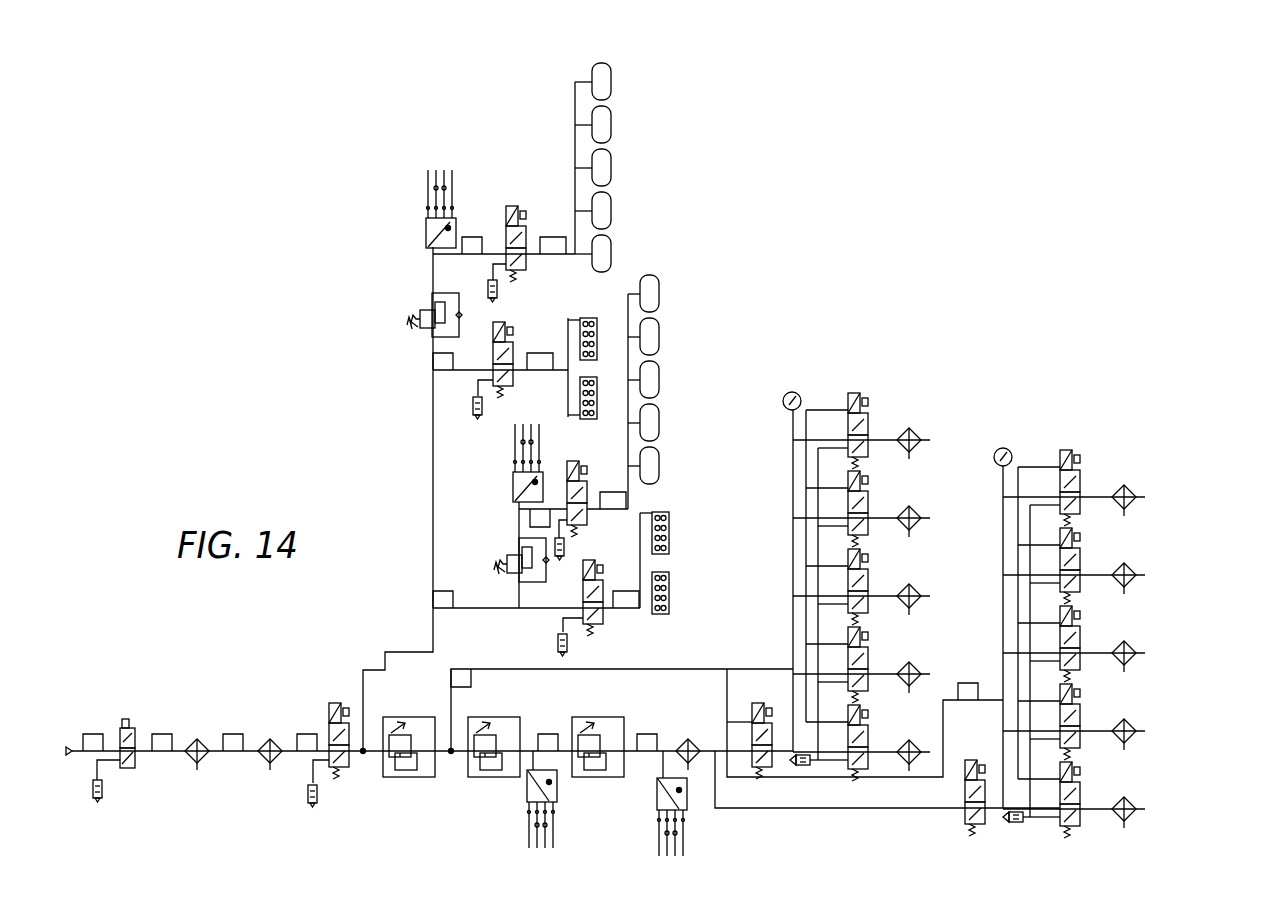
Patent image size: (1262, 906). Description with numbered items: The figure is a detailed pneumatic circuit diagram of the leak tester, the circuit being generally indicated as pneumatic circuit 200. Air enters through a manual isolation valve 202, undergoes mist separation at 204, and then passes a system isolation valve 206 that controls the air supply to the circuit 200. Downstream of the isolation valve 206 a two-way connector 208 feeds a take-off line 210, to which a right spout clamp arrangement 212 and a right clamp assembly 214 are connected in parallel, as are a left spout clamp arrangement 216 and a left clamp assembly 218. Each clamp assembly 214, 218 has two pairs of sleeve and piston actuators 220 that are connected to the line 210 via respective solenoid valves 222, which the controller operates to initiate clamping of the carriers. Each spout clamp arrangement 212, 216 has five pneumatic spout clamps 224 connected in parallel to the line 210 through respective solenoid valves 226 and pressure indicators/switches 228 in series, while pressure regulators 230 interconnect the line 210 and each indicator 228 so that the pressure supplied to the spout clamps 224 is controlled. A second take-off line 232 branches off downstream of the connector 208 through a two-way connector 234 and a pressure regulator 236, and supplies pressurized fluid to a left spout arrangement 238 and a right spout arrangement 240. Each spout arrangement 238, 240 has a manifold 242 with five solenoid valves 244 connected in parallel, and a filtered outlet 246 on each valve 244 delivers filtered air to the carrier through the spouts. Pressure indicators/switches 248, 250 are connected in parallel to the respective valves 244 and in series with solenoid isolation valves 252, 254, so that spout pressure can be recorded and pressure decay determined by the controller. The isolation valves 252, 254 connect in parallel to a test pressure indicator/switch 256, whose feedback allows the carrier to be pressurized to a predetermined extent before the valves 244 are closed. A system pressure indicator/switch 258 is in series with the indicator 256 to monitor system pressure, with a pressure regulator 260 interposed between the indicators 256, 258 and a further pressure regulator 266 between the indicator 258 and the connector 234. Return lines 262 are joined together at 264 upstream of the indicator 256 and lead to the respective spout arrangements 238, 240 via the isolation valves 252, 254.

The pneumatic circuit 200 is at (950, 272).
The manual isolation valve 202 is at (133, 728).
The mist separation 204 is at (206, 733).
The system isolation valve 206 is at (344, 775).
The two-way connector 208 is at (364, 758).
The take-off line 210 is at (433, 645).
The right spout clamp arrangement 212 is at (662, 120).
The right clamp assembly 214 is at (597, 298).
The left spout clamp arrangement 216 is at (686, 290).
The left clamp assembly 218 is at (672, 508).
The sleeve and piston actuators 220 is at (585, 320).
The solenoid valves 222 is at (512, 348).
The pneumatic spout clamps 224 is at (611, 85).
The solenoid valves 226 is at (516, 210).
The pressure indicators/switches 228 is at (456, 220).
The pressure regulators 230 is at (422, 318).
The second take-off line 232 is at (540, 669).
The two-way connector 234 is at (451, 758).
The pressure regulator 236 is at (412, 778).
The left spout arrangement 238 is at (870, 385).
The right spout arrangement 240 is at (1080, 443).
The manifold 242 is at (828, 408).
The solenoid valves 244 is at (870, 410).
The filtered outlet 246 is at (921, 438).
The pressure transmitter or pressure indicator/switch 248 is at (795, 392).
The pressure transmitter or pressure indicator/switch 250 is at (1006, 448).
The solenoid isolation valve 252 is at (768, 772).
The solenoid isolation valve 254 is at (986, 820).
The test pressure indicator/switch 256 is at (688, 795).
The system pressure indicator/switch 258 is at (560, 786).
The pressure regulator 260 is at (584, 717).
The return lines 262 is at (715, 758).
The junction of return lines 264 is at (687, 739).
The further pressure regulator 266 is at (494, 717).